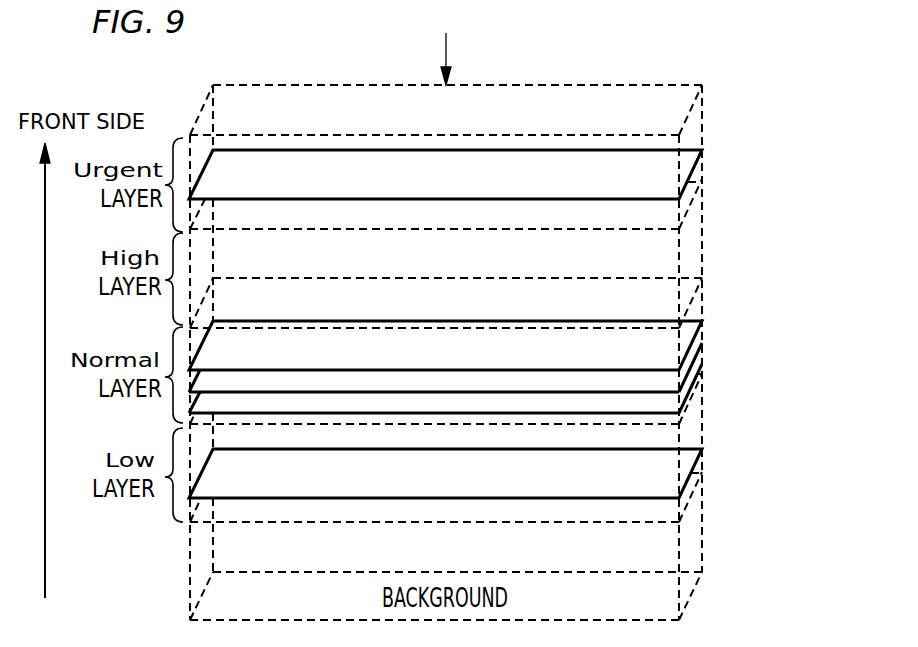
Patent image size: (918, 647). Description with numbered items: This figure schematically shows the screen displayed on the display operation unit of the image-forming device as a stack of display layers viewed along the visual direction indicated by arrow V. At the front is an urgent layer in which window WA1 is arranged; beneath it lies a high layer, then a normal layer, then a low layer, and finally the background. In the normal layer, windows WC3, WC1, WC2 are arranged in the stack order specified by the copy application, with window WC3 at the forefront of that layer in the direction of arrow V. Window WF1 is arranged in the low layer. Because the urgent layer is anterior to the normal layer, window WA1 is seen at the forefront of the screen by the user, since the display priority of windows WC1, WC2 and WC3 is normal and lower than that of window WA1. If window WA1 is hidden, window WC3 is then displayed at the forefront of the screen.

The window WA1 is at (687, 166).
The window WC3 is at (684, 332).
The window WC1 is at (686, 358).
The window WC2 is at (688, 384).
The window WF1 is at (689, 465).
The arrow V is at (456, 59).